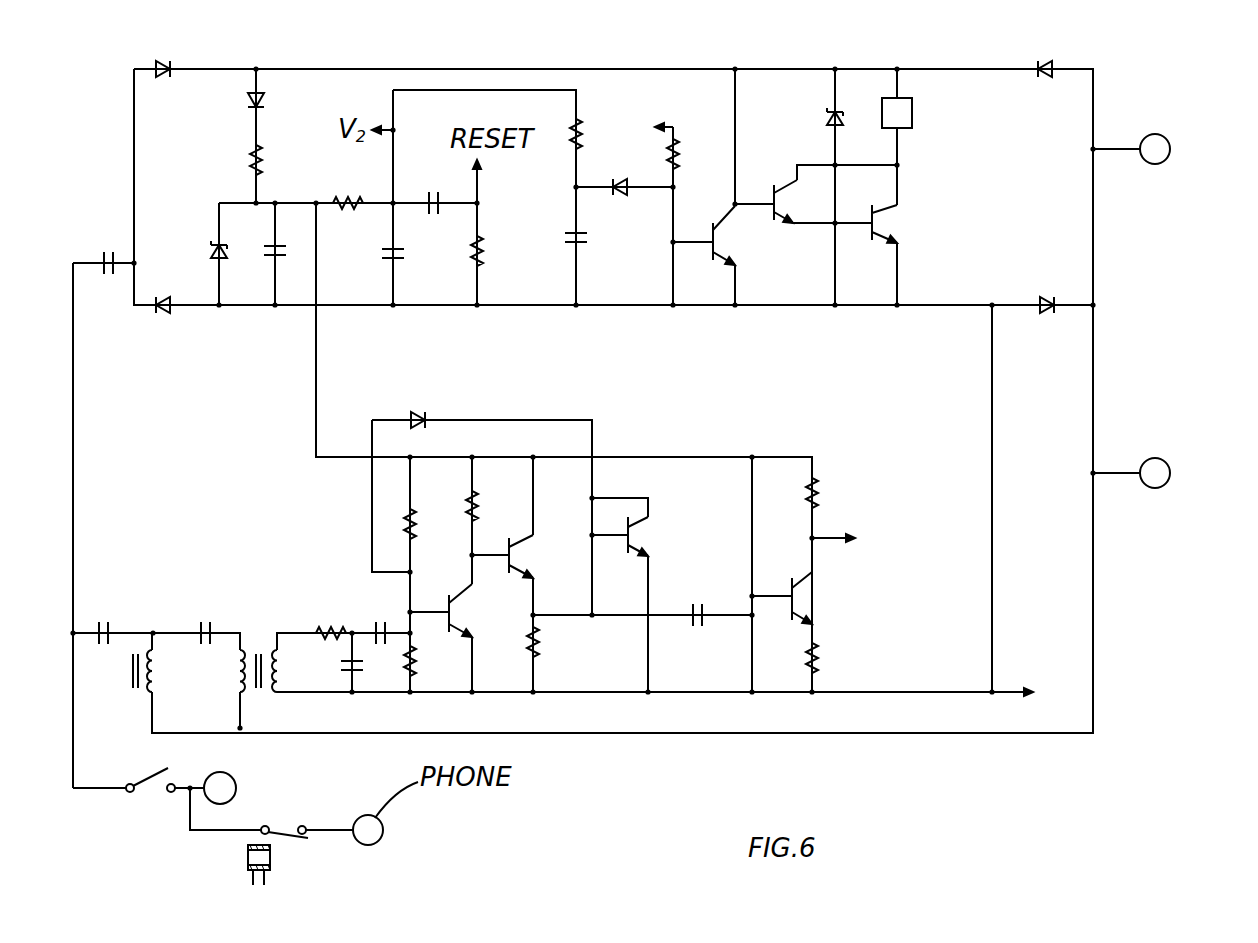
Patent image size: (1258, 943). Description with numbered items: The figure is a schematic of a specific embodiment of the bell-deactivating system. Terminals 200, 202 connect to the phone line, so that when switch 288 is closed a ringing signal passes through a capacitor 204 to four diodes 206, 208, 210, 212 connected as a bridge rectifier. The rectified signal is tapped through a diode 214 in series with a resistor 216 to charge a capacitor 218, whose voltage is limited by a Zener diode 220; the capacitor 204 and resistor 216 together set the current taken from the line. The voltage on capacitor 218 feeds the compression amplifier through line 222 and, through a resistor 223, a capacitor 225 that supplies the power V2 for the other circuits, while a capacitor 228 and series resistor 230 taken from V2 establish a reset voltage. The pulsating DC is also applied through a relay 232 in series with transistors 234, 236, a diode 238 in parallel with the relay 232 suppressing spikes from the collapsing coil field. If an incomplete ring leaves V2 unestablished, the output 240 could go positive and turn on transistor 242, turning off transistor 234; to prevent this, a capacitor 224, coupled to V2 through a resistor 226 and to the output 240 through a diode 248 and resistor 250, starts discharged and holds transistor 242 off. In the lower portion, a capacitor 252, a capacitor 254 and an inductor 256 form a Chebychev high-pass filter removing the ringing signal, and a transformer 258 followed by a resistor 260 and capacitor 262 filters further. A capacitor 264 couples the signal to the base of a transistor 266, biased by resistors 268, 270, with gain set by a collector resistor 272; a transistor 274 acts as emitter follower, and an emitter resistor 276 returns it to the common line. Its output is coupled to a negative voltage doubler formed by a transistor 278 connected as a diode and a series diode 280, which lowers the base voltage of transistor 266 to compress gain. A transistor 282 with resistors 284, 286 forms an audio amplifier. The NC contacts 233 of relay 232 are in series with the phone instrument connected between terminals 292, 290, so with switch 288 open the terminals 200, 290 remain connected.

The terminal 200 is at (230, 777).
The terminal 202 is at (1166, 138).
The capacitor 204 is at (100, 258).
The diode 206 is at (168, 60).
The diode 208 is at (163, 316).
The diode 210 is at (1053, 65).
The diode 212 is at (1040, 300).
The diode 214 is at (263, 100).
The resistor 216 is at (252, 162).
The capacitor 218 is at (274, 245).
The Zener diode 220 is at (213, 243).
The line 222 is at (318, 358).
The resistor 223 is at (355, 180).
The capacitor 224 is at (572, 235).
The capacitor 225 is at (396, 250).
The resistor 226 is at (572, 132).
The capacitor 228 is at (430, 198).
The resistor 230 is at (482, 258).
The relay 232 is at (914, 112).
The NC contacts 233 is at (302, 825).
The transistor 234 is at (866, 215).
The transistor 236 is at (770, 190).
The diode 238 is at (825, 118).
The output 240 is at (667, 125).
The transistor 242 is at (730, 255).
The diode 248 is at (622, 200).
The resistor 250 is at (670, 155).
The capacitor 252 is at (100, 625).
The capacitor 254 is at (200, 625).
The inductor 256 is at (132, 685).
The transformer 258 is at (252, 628).
The resistor 260 is at (320, 626).
The capacitor 262 is at (350, 672).
The capacitor 264 is at (375, 625).
The transistor 266 is at (452, 612).
The resistor 268 is at (406, 520).
The resistor 270 is at (418, 685).
The collector resistor 272 is at (478, 488).
The transistor 274 is at (516, 545).
The resistor 276 is at (540, 642).
The transistor 278 is at (636, 525).
The series diode 280 is at (425, 412).
The transistor 282 is at (800, 592).
The resistor 284 is at (815, 485).
The resistor 286 is at (816, 655).
The switch 288 is at (150, 780).
The terminal 290 is at (384, 828).
The terminal 292 is at (1168, 478).